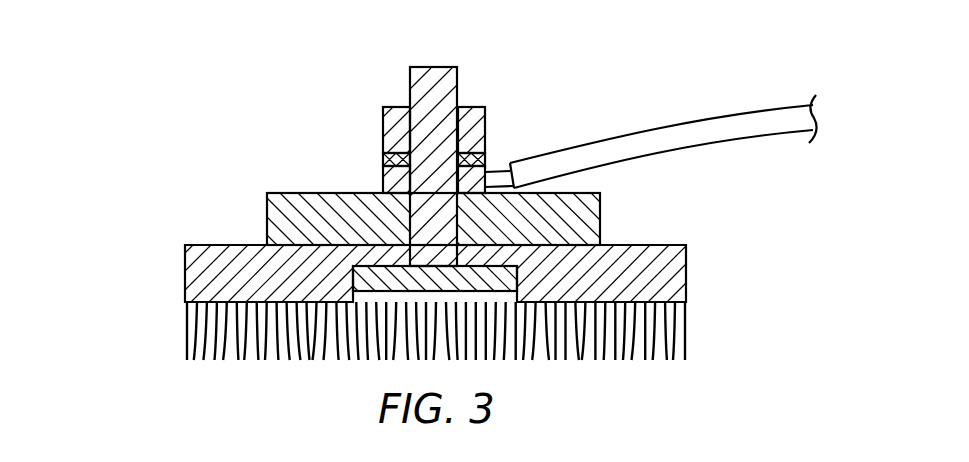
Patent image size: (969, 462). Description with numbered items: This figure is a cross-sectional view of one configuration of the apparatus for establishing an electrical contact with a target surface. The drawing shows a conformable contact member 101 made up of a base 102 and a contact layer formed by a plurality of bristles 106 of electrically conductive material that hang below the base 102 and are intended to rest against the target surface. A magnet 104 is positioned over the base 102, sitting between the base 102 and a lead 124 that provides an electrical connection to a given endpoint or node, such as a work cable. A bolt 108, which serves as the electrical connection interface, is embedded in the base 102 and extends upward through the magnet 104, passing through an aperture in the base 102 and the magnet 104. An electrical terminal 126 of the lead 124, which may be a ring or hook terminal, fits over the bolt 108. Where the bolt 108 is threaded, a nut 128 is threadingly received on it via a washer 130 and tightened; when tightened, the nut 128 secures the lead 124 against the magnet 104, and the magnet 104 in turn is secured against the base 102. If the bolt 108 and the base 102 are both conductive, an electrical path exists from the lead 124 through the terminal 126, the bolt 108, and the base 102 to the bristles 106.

The conformable contact member 101 is at (705, 245).
The base 102 is at (185, 275).
The magnet 104 is at (267, 224).
The bristles 106 is at (187, 345).
The bolt 108 is at (438, 67).
The lead 124 is at (680, 122).
The electrical terminal 126 is at (383, 185).
The nut 128 is at (383, 125).
The washer 130 is at (383, 160).